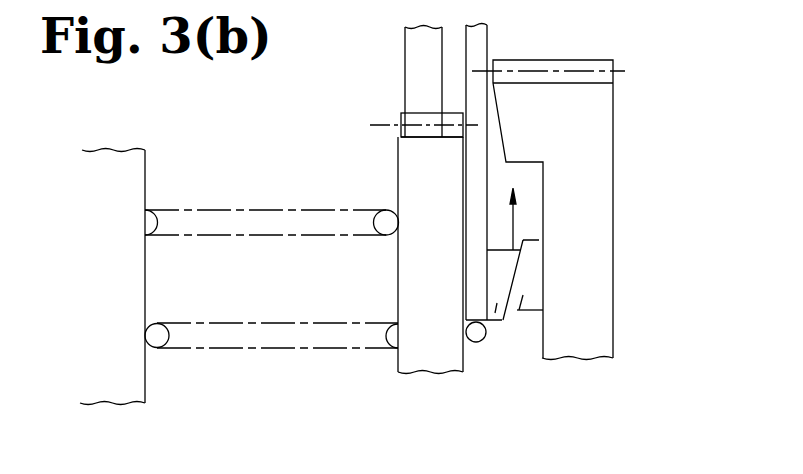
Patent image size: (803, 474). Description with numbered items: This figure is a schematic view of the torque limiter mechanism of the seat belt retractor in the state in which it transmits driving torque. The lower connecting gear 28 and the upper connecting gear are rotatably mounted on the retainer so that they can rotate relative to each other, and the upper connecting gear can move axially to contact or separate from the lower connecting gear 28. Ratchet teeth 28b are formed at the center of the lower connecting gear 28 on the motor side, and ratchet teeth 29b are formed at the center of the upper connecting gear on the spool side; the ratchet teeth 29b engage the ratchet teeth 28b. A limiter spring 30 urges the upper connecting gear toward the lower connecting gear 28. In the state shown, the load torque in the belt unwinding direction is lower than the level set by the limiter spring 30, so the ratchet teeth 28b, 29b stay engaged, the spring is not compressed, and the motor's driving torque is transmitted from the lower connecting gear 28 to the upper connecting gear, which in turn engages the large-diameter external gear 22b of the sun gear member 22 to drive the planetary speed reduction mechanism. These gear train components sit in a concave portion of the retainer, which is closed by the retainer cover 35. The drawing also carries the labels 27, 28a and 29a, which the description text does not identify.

The sun gear member 22 is at (418, 52).
The large-diameter external gear 22b is at (435, 118).
The guide plate 27 is at (478, 43).
The lower connecting gear 28 is at (598, 210).
The upper portion of movable block 28a is at (592, 65).
The ratchet teeth 28b is at (520, 312).
The upper engaging portion 29a is at (453, 115).
The ratchet teeth 29b is at (493, 320).
The limiter spring 30 is at (157, 337).
The retainer cover 35 is at (120, 175).